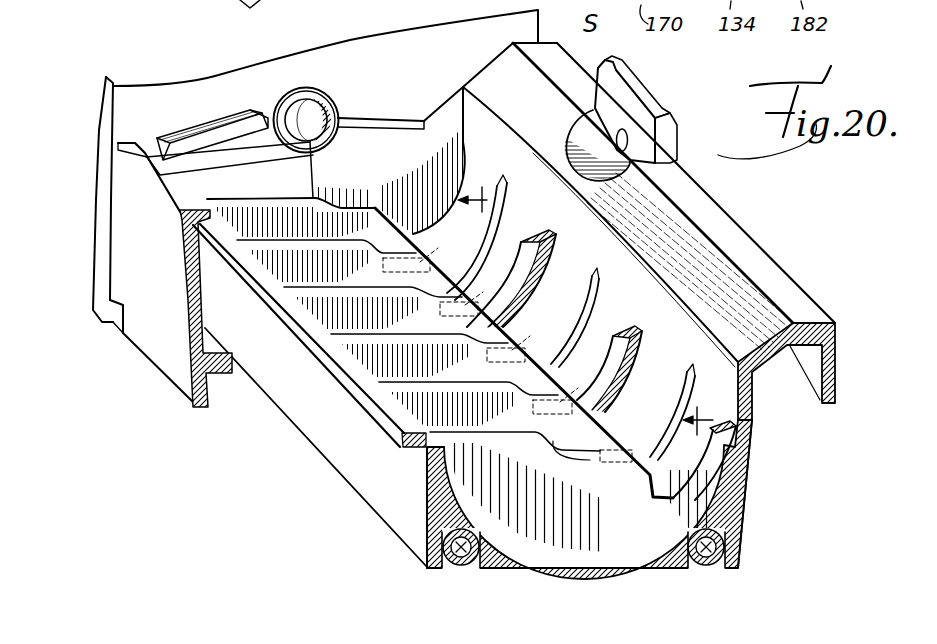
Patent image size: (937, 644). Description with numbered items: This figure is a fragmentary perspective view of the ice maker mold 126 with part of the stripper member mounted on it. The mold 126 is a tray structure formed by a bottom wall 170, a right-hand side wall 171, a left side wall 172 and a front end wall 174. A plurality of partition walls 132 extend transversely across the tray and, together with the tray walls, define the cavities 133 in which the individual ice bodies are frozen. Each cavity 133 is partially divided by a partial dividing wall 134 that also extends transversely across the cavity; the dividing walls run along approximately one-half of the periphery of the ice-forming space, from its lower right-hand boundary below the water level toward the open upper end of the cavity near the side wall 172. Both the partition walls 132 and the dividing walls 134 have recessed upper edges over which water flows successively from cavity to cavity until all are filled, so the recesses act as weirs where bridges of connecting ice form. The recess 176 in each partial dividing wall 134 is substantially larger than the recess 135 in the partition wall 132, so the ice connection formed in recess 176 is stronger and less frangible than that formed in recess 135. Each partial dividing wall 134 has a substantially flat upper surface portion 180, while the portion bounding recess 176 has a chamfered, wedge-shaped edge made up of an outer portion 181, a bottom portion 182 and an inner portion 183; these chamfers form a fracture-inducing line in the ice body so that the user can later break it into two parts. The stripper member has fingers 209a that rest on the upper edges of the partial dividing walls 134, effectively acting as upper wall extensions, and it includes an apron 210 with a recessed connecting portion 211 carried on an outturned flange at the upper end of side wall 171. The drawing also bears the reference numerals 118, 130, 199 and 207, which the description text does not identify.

The channel member 118 is at (683, 166).
The mold 126 is at (357, 467).
The side plate 130 is at (97, 162).
The partition wall 132 is at (538, 249).
The cavity 133 is at (470, 248).
The partial dividing wall 134 is at (470, 318).
The recess 135 is at (503, 237).
The bottom wall 170 is at (590, 572).
The side wall 171 is at (427, 513).
The side wall 172 is at (727, 497).
The front end wall 174 is at (385, 137).
The recess 176 is at (566, 346).
The flat upper surface portion 180 is at (563, 440).
The outer portion 181 is at (676, 383).
The bottom portion 182 is at (612, 417).
The inner portion 183 is at (633, 460).
The body 199 is at (362, 50).
The screw 207 is at (462, 566).
The finger 209a is at (227, 170).
The apron 210 is at (160, 327).
The recessed connecting portion 211 is at (182, 232).